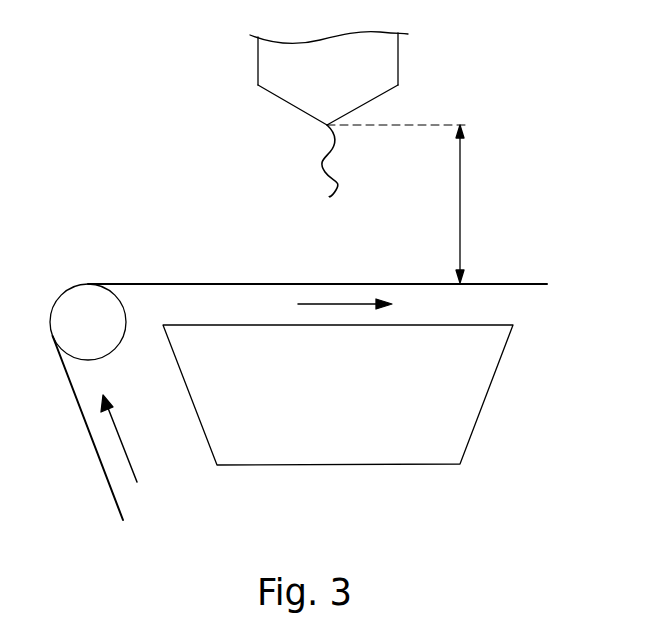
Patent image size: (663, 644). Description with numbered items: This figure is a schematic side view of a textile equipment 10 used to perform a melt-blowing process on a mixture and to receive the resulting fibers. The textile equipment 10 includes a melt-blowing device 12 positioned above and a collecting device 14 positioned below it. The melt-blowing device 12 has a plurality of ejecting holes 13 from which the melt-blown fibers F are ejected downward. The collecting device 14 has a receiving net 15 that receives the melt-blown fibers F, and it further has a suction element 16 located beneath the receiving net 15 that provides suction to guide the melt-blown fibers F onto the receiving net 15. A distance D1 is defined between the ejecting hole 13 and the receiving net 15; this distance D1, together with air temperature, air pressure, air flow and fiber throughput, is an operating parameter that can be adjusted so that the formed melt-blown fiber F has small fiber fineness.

The textile equipment 10 is at (80, 24).
The melt-blowing device 12 is at (398, 62).
The ejecting hole 13 is at (321, 127).
The melt-blown fiber F is at (340, 183).
The distance D1 is at (414, 204).
The collecting device 14 is at (78, 403).
The receiving net 15 is at (523, 283).
The suction element 16 is at (473, 413).